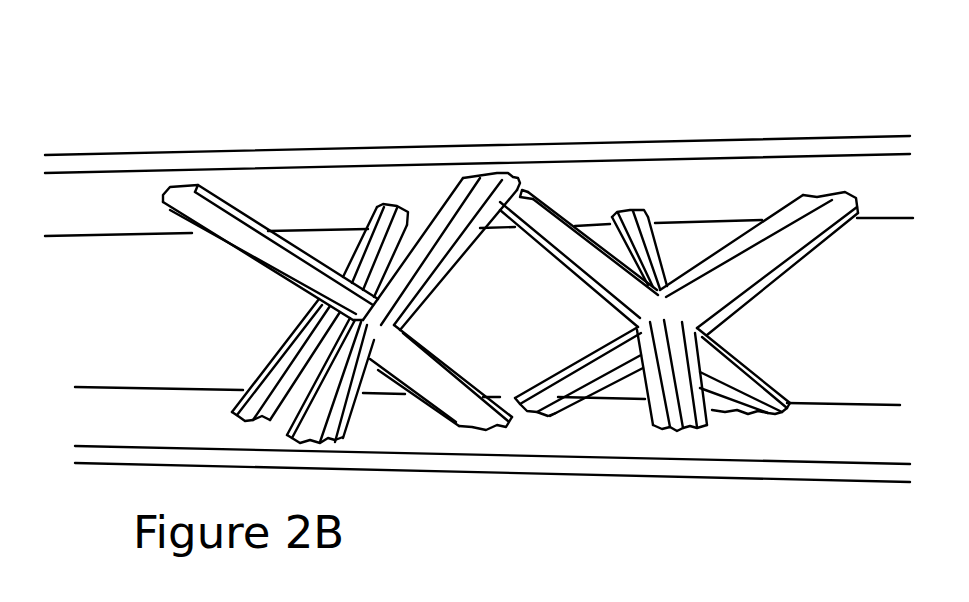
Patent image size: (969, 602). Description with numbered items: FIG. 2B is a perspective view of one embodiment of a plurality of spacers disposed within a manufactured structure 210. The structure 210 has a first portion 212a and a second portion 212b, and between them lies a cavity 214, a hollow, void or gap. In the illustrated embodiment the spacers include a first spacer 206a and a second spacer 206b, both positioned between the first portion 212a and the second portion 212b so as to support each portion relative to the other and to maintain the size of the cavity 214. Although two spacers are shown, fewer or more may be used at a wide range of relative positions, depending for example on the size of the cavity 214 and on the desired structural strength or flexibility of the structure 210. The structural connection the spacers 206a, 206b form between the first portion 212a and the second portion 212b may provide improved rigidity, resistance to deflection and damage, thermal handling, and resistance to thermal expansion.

The manufactured structure 210 is at (158, 80).
The first portion 212a is at (297, 153).
The second portion 212b is at (684, 471).
The first spacer 206a is at (280, 354).
The second spacer 206b is at (735, 349).
The cavity 214 is at (507, 325).